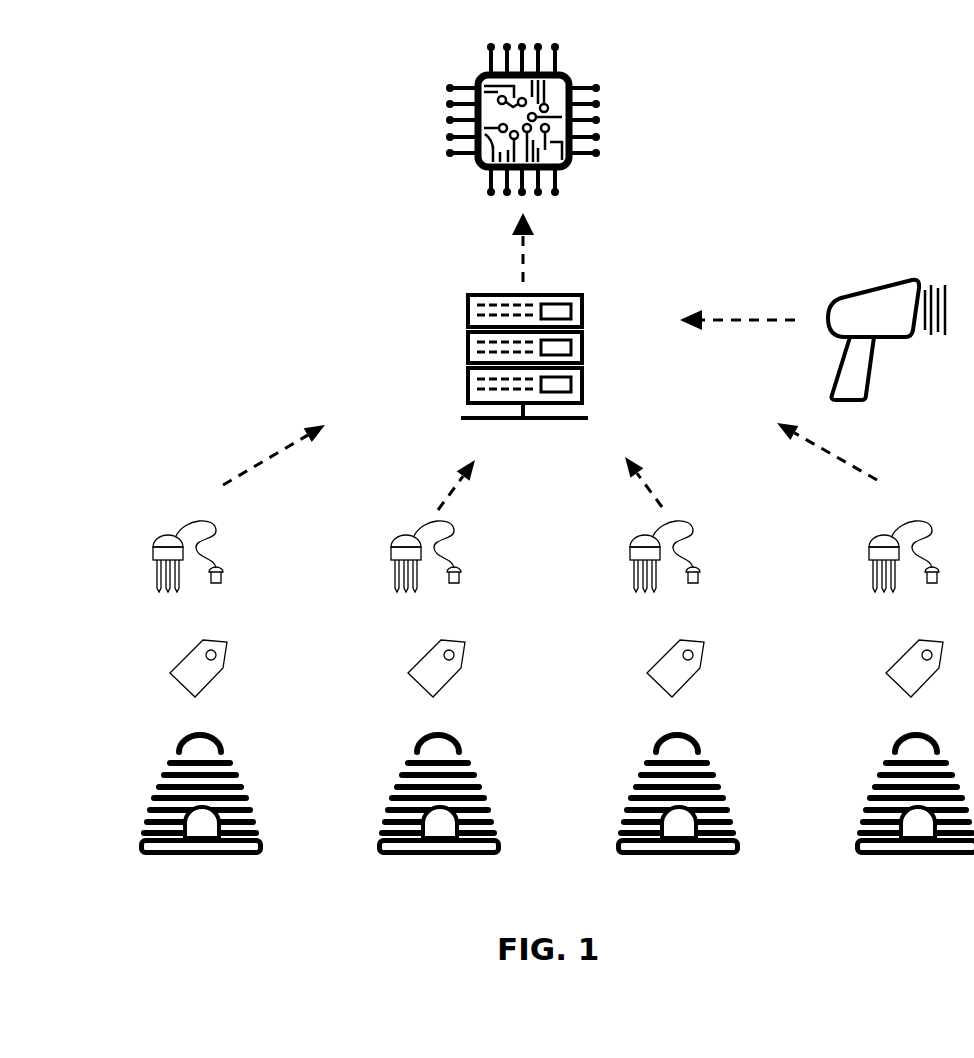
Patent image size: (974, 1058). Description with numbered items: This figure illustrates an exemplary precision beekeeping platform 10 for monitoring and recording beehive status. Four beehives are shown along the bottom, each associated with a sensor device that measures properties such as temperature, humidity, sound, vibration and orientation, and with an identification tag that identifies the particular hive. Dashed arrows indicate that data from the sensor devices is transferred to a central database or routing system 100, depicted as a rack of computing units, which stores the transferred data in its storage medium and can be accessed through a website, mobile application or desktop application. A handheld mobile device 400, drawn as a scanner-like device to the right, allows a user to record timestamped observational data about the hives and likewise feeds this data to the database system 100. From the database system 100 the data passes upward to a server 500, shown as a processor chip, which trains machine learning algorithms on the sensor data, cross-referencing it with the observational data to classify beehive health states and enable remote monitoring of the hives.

The precision beekeeping platform 10 is at (205, 234).
The database system 100 is at (583, 280).
The mobile device 400 is at (880, 265).
The server 500 is at (619, 93).